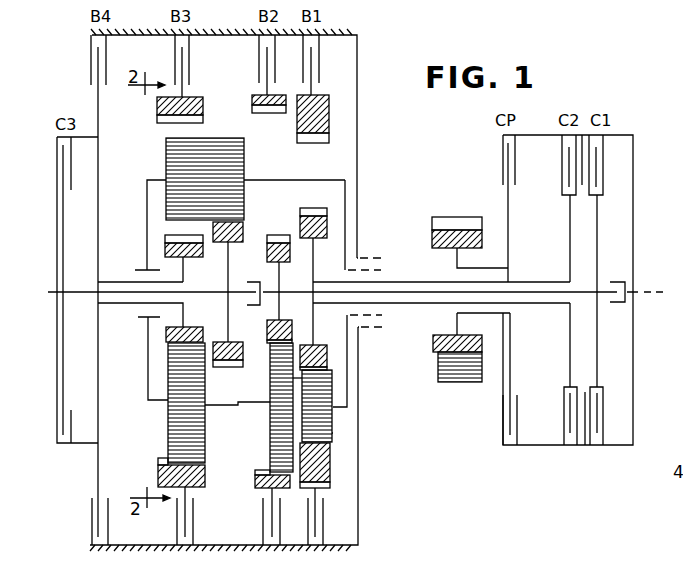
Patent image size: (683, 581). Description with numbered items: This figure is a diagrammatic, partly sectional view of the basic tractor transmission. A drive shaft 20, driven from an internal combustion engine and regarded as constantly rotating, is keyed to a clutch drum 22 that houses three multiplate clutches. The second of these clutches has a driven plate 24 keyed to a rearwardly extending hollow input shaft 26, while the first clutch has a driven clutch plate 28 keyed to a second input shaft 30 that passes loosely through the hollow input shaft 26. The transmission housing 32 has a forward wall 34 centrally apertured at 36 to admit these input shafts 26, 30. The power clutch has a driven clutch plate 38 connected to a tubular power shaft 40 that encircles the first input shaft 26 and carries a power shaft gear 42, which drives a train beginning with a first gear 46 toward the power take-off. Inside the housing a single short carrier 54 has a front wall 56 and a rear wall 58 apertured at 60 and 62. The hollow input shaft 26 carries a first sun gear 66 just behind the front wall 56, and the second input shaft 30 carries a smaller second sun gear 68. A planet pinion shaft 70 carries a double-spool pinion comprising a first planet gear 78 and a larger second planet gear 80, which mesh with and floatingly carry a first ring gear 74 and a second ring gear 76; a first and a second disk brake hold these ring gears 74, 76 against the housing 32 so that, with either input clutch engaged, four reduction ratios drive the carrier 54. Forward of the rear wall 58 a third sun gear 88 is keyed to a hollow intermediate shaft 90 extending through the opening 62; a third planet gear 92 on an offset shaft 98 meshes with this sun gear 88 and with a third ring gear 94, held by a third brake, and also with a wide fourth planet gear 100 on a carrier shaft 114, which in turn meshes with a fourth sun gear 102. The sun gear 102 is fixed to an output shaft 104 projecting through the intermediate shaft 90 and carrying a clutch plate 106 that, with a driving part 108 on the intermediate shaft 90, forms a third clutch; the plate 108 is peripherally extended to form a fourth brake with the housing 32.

The drive shaft 20 is at (647, 290).
The clutch drum 22 is at (627, 446).
The driven plate 24 is at (569, 237).
The hollow input shaft 26 is at (536, 281).
The driven clutch plate 28 is at (598, 348).
The second input shaft 30 is at (540, 304).
The transmission housing 32 is at (358, 57).
The forward wall 34 is at (359, 455).
The central aperture 36 is at (394, 323).
The driven clutch plate 38 is at (507, 201).
The tubular power shaft 40 is at (490, 268).
The power shaft gear 42 is at (440, 217).
The first gear 46 is at (458, 383).
The carrier 54 is at (329, 177).
The front wall 56 is at (348, 388).
The rear wall 58 is at (147, 383).
The front wall opening 60 is at (367, 276).
The rear wall opening 62 is at (134, 271).
The first sun gear 66 is at (316, 210).
The second sun gear 68 is at (277, 235).
The planet pinion shaft 70 is at (333, 412).
The first ring gear 74 is at (330, 488).
The second ring gear 76 is at (258, 489).
The first planet gear 78 is at (333, 433).
The second planet gear 80 is at (269, 442).
The third sun gear 88 is at (195, 251).
The intermediate shaft 90 is at (121, 304).
The third planet gear 92 is at (174, 430).
The third ring gear 94 is at (200, 488).
The planet gear shaft 98 is at (212, 406).
The fourth planet gear 100 is at (240, 140).
The fourth sun gear 102 is at (222, 368).
The output shaft 104 is at (54, 292).
The clutch plate 106 is at (62, 217).
The driving part 108 is at (99, 156).
The carrier shaft 114 is at (262, 180).